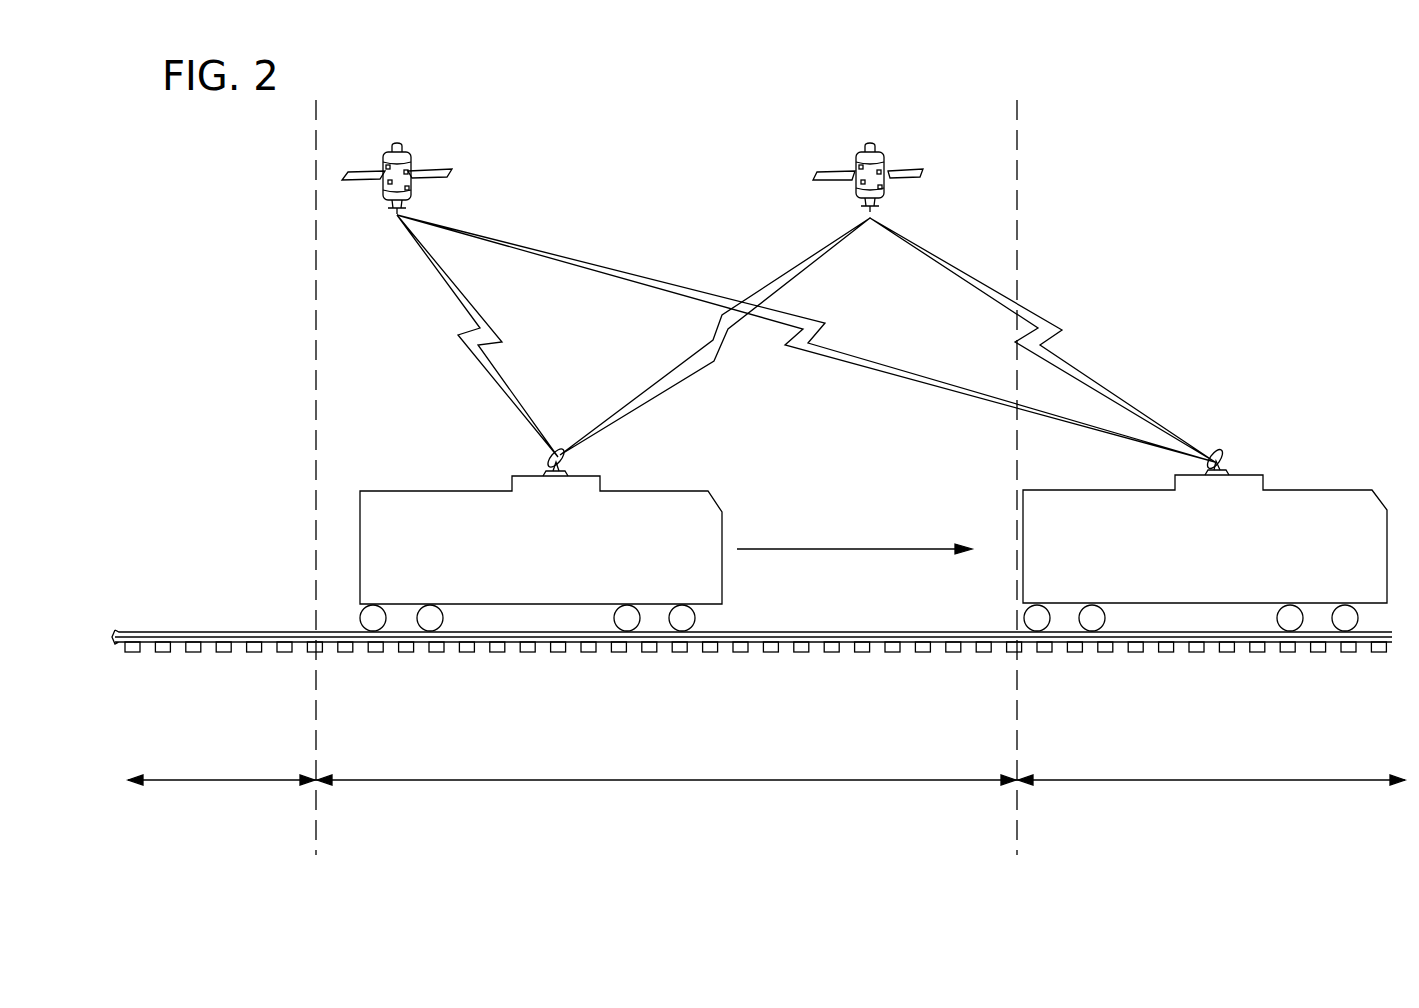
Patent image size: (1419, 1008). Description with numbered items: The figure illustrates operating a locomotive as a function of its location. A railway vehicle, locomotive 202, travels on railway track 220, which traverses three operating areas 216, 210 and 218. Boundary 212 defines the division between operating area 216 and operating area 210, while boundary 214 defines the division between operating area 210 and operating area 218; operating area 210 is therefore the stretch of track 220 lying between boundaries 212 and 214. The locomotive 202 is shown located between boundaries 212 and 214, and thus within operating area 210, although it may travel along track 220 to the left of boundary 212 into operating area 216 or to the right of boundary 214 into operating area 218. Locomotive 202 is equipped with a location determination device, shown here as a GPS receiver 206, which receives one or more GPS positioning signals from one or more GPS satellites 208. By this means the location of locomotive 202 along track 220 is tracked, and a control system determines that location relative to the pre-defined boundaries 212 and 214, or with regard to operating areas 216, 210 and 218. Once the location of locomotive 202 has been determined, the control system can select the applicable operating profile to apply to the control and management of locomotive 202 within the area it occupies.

The locomotive 202 is at (706, 490).
The GPS receiver 206 is at (567, 466).
The GPS satellites 208 is at (410, 190).
The operating area 210 is at (798, 781).
The boundary 212 is at (317, 715).
The boundary 214 is at (1018, 711).
The operating area 216 is at (254, 782).
The operating area 218 is at (1318, 782).
The railway track 220 is at (218, 632).